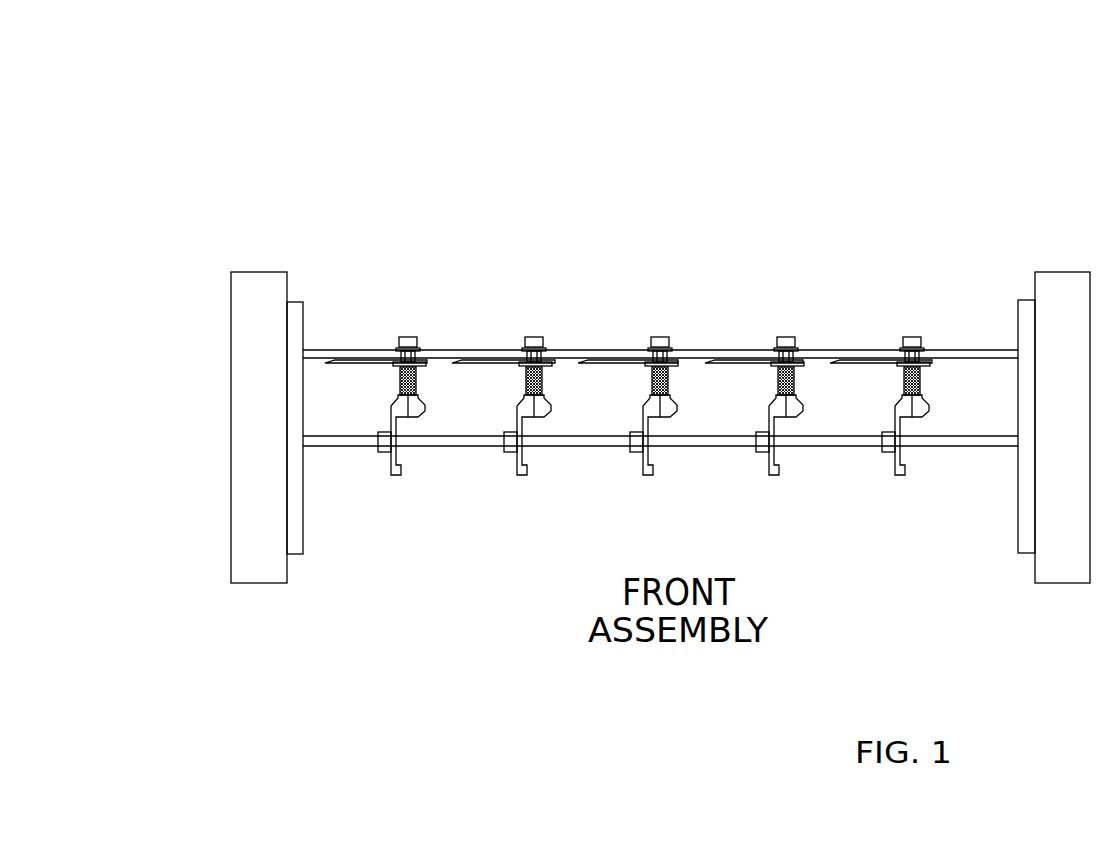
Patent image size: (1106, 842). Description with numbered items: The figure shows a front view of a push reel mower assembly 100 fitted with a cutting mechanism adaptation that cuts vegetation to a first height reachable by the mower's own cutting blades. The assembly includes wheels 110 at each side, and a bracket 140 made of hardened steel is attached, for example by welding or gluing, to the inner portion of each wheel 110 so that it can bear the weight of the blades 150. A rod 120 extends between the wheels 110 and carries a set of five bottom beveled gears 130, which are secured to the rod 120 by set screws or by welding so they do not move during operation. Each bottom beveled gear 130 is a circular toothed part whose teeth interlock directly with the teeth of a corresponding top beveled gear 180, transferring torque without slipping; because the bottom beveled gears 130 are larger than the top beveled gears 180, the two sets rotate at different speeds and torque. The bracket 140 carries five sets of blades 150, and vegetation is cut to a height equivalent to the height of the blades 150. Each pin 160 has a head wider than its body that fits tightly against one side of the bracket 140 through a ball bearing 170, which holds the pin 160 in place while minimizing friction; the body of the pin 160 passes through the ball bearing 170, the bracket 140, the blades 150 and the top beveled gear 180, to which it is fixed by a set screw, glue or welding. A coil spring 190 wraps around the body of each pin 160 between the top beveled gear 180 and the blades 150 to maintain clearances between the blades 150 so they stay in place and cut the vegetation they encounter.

The push reel mower assembly 100 is at (905, 130).
The wheels 110 is at (230, 268).
The rod 120 is at (828, 448).
The bottom beveled gears 130 is at (510, 420).
The bracket 140 is at (590, 350).
The blades 150 is at (723, 358).
The pins 160 is at (939, 285).
The ball bearings 170 is at (966, 301).
The top beveled gears 180 is at (398, 408).
The springs 190 is at (648, 382).